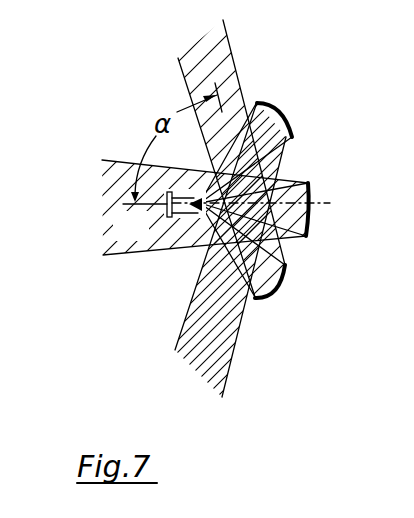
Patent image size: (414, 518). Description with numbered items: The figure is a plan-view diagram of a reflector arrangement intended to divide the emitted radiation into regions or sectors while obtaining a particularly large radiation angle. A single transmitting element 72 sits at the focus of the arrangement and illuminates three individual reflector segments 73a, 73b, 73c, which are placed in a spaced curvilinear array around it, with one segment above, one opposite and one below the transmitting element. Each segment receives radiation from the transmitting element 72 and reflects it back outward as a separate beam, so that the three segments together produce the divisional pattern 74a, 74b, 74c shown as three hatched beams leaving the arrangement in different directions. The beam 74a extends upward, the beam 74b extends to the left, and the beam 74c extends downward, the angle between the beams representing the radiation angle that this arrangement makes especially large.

The transmitting element 72 is at (168, 213).
The reflector segment 73a is at (262, 293).
The reflector segment 73b is at (308, 230).
The reflector segment 73c is at (288, 126).
The divisional pattern 74a is at (207, 259).
The divisional pattern 74b is at (207, 259).
The divisional pattern 74c is at (207, 259).